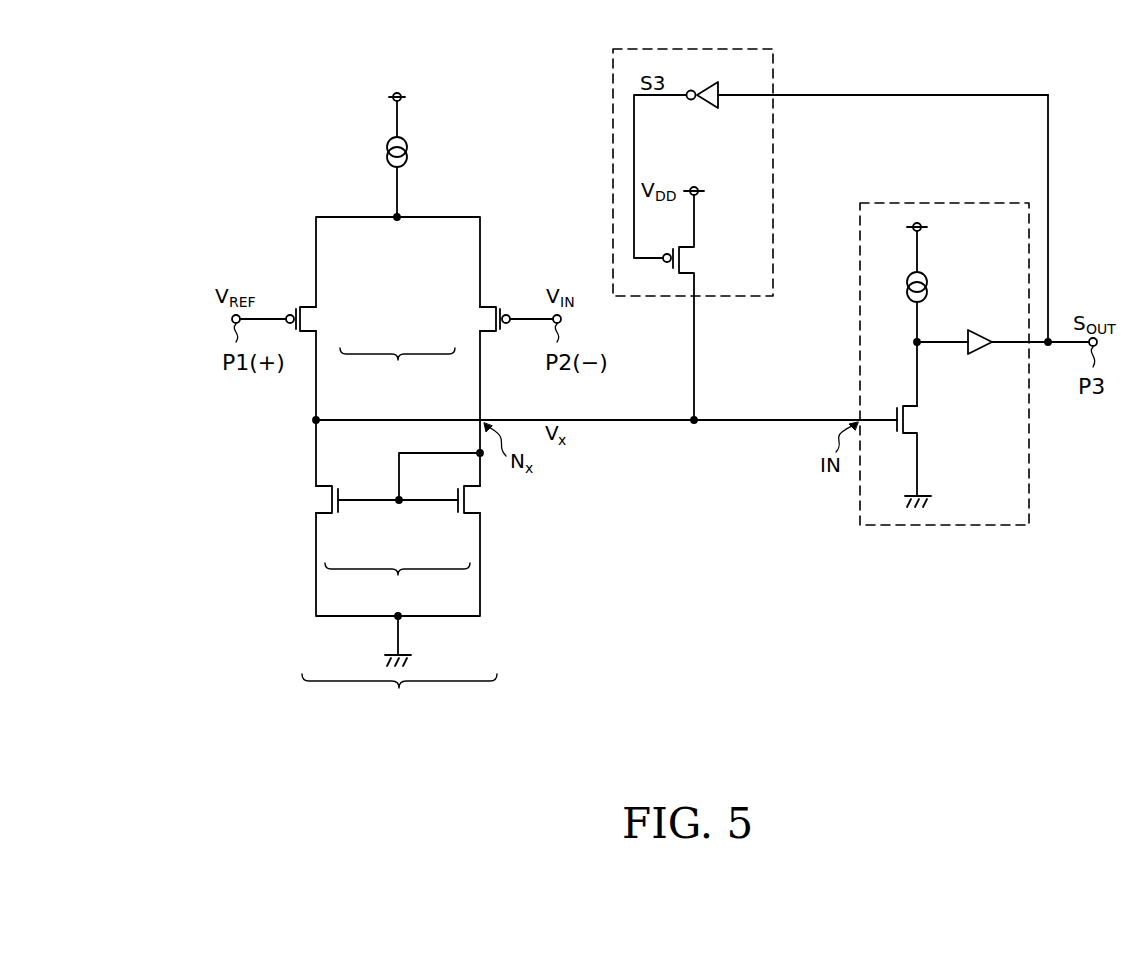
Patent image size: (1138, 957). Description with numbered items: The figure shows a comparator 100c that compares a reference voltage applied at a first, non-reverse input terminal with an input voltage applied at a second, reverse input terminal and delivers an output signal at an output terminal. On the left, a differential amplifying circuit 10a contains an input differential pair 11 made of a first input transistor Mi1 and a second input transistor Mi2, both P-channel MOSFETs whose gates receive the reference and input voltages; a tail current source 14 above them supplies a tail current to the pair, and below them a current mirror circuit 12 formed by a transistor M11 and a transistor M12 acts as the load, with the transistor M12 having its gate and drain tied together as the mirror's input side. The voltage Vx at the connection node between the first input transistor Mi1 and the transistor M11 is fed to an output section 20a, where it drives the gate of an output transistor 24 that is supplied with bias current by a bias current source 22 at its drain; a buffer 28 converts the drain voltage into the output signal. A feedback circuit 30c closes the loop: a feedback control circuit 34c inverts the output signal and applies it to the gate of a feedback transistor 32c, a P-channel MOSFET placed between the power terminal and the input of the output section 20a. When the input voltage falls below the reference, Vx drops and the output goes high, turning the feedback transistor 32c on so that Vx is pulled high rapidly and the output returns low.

The tail current source 14 is at (408, 150).
The input differential pair 11 is at (397, 369).
The current mirror circuit 12 is at (397, 583).
The differential amplifying circuit 10a is at (399, 696).
The feedback circuit 30c is at (714, 50).
The feedback control circuit 34c is at (707, 108).
The feedback transistor 32c is at (700, 258).
The bias current source 22 is at (930, 285).
The buffer 28 is at (987, 352).
The output transistor 24 is at (922, 417).
The output section 20a is at (946, 527).
The comparator 100c is at (709, 768).
The first input transistor Mi1 is at (320, 318).
The second input transistor Mi2 is at (476, 318).
The transistor M11 is at (336, 517).
The transistor M12 is at (462, 517).